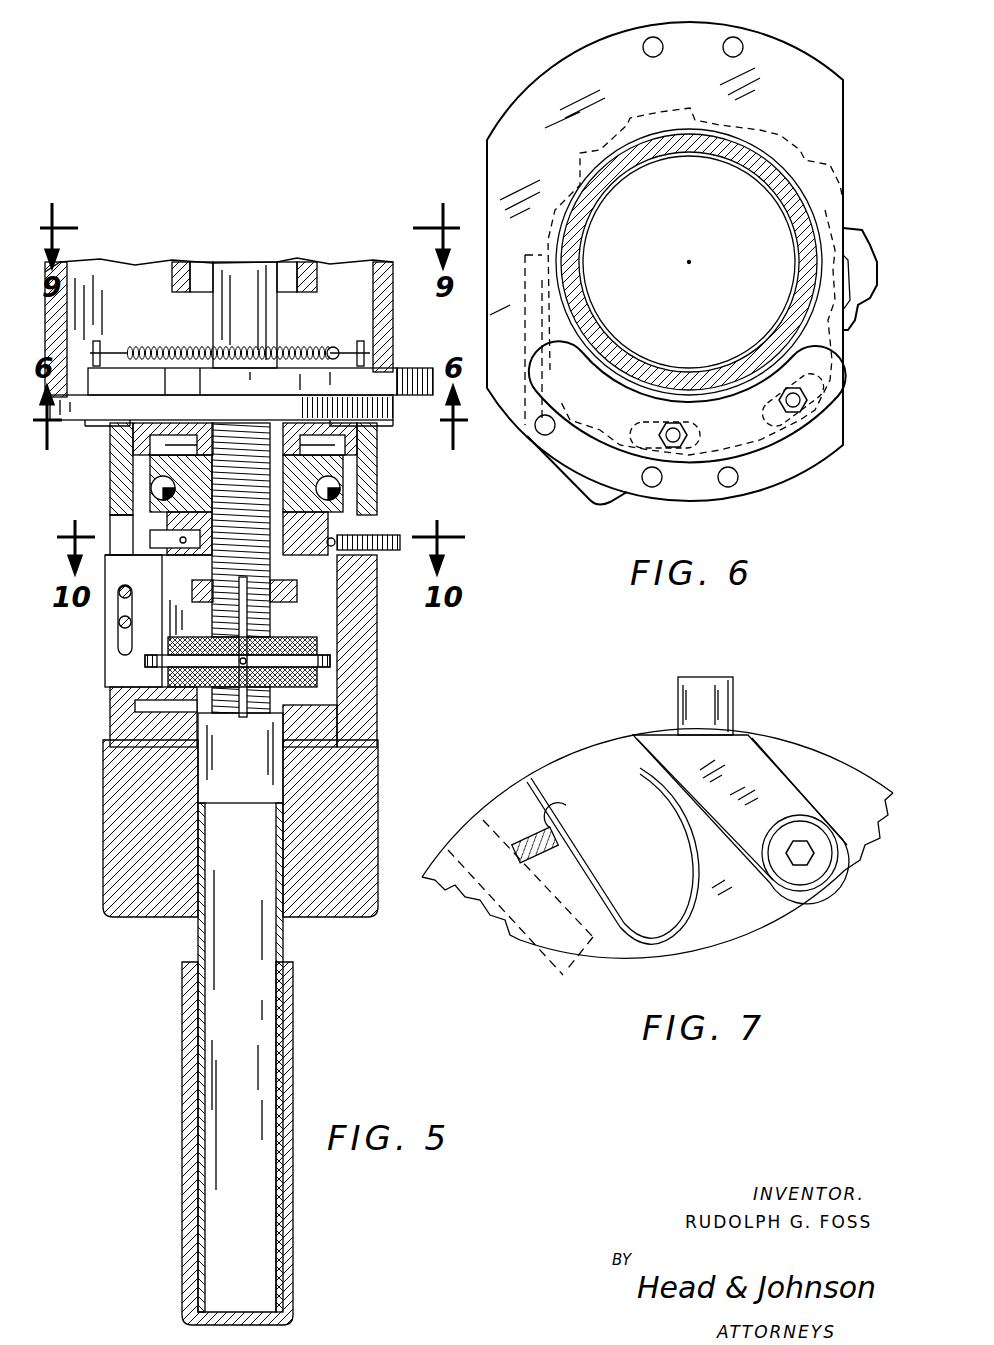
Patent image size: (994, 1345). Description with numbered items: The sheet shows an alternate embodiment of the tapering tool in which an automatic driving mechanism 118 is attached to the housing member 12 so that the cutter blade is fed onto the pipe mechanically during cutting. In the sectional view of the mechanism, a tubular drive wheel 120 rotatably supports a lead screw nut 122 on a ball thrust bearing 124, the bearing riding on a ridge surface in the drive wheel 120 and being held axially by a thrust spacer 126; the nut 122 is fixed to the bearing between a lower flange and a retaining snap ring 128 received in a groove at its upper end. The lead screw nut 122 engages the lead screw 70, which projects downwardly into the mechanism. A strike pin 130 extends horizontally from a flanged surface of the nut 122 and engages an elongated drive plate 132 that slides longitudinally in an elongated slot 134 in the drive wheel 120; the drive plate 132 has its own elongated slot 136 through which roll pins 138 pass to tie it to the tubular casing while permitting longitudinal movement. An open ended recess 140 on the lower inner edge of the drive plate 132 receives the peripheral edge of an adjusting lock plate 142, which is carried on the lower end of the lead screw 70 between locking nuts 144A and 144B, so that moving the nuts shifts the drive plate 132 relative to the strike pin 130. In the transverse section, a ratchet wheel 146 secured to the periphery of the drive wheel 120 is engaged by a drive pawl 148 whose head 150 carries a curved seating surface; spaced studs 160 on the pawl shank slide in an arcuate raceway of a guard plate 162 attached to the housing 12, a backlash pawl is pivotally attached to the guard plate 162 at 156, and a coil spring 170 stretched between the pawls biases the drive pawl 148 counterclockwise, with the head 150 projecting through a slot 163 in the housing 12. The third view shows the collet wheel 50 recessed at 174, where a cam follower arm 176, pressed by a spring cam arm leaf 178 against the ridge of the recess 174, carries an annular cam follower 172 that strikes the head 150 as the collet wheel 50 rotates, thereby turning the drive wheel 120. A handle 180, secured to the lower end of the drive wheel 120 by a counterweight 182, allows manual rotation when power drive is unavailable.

In FIG. 5, the housing member 12 is at (367, 287).
In FIG. 7, the collet wheel 50 is at (593, 758).
In FIG. 5, the lead screw 70 is at (272, 320).
In FIG. 5, the automatic driving mechanism 118 is at (463, 630).
In FIG. 5, the tubular drive wheel 120 is at (365, 678).
In FIG. 5, the lead screw nut 122 is at (325, 528).
In FIG. 5, the thrust bearing 124 is at (345, 485).
In FIG. 5, the thrust spacer 126 is at (378, 440).
In FIG. 5, the retaining snap ring 128 is at (372, 455).
In FIG. 5, the strike pin 130 is at (160, 545).
In FIG. 5, the drive plate 132 is at (112, 555).
In FIG. 5, the elongated slot 134 is at (118, 508).
In FIG. 5, the elongated slot 136 is at (118, 650).
In FIG. 5, the roll pins 138 is at (119, 622).
In FIG. 5, the open ended recess 140 is at (148, 660).
In FIG. 5, the adjusting lock plate 142 is at (330, 662).
In FIG. 5, the locking nut 144A is at (325, 624).
In FIG. 5, the locking nut 144B is at (317, 690).
In FIG. 6, the ratchet wheel 146 is at (838, 170).
In FIG. 6, the drive pawl 148 is at (860, 240).
In FIG. 5, the head 150 is at (425, 380).
In FIG. 6, the head 150 is at (862, 285).
In FIG. 6, the pivot 156 is at (546, 436).
In FIG. 6, the studs 160 is at (790, 388).
In FIG. 5, the guard plate 162 is at (95, 425).
In FIG. 6, the guard plate 162 is at (540, 82).
In FIG. 5, the slot 163 is at (390, 370).
In FIG. 5, the coil spring 170 is at (192, 345).
In FIG. 7, the annular cam follower 172 is at (735, 695).
In FIG. 7, the recess 174 is at (785, 735).
In FIG. 7, the cam follower arm 176 is at (740, 752).
In FIG. 7, the spring cam arm leaf 178 is at (683, 940).
In FIG. 5, the handle 180 is at (296, 1028).
In FIG. 5, the counterweight 182 is at (365, 912).